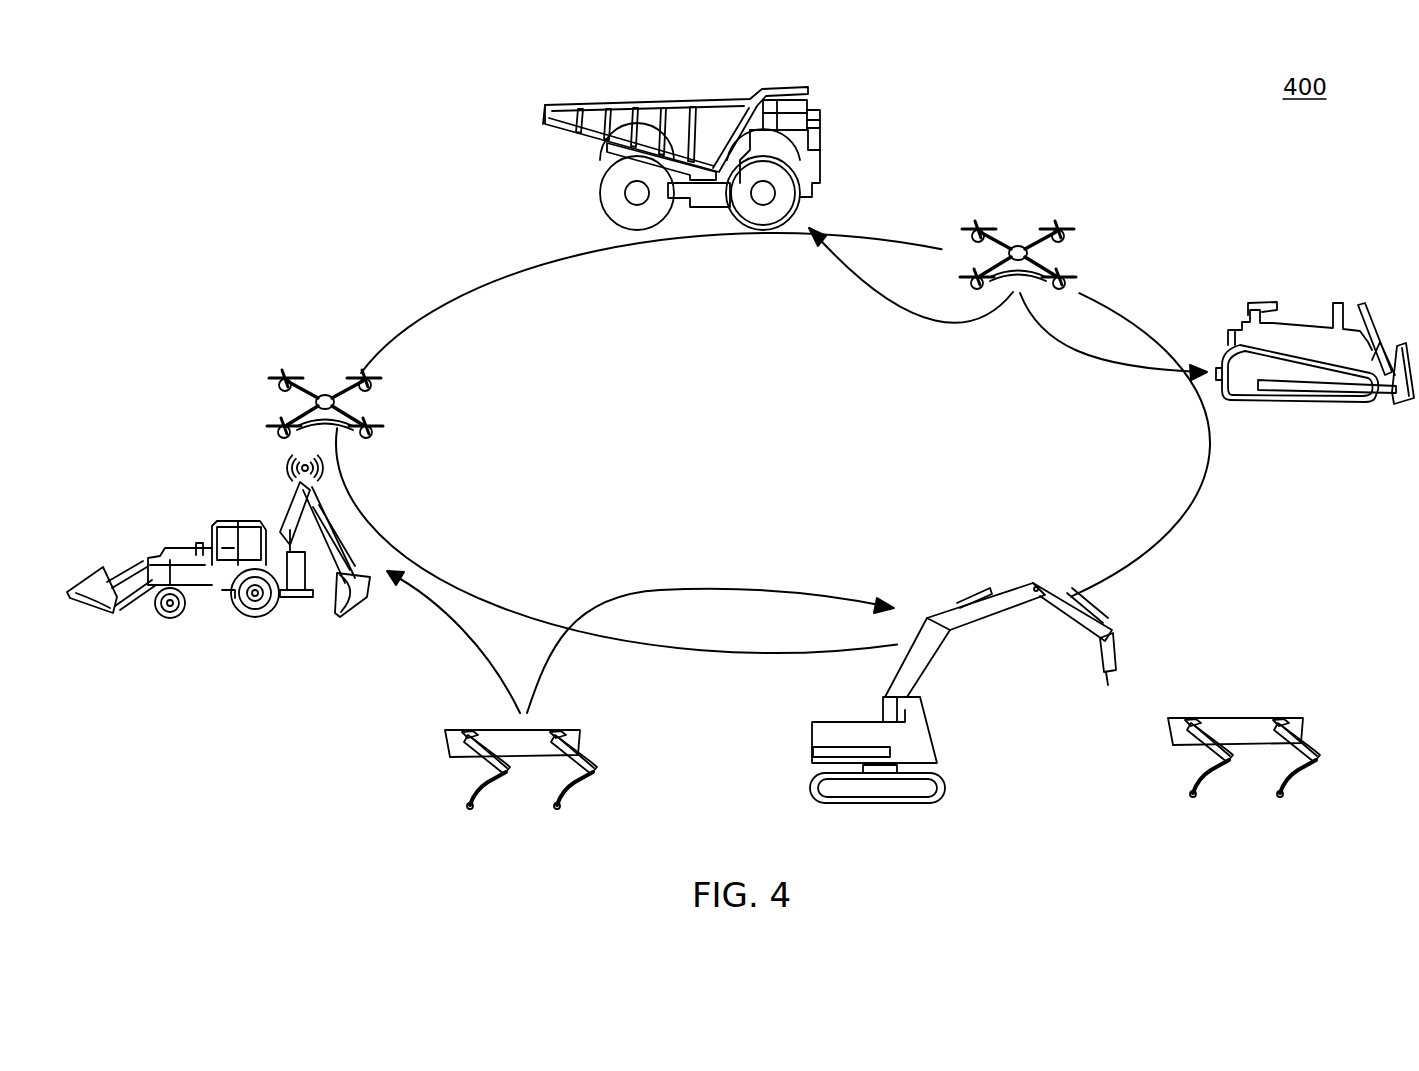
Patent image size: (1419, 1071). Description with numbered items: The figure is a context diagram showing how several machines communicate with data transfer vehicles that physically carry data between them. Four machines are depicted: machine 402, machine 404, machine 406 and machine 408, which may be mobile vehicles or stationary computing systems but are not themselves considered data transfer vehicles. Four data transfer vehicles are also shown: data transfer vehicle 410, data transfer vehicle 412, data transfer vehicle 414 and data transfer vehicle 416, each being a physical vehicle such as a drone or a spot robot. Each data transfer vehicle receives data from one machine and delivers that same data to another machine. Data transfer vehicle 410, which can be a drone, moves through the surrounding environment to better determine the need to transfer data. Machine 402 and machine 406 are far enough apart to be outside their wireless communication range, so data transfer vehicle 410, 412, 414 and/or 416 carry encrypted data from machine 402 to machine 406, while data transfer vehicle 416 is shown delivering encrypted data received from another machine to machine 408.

The machine 402 is at (627, 100).
The machine 404 is at (1297, 323).
The machine 406 is at (933, 733).
The machine 408 is at (226, 522).
The data transfer vehicle 410 is at (1067, 230).
The data transfer vehicle 412 is at (1285, 718).
The data transfer vehicle 414 is at (593, 782).
The data transfer vehicle 416 is at (274, 380).